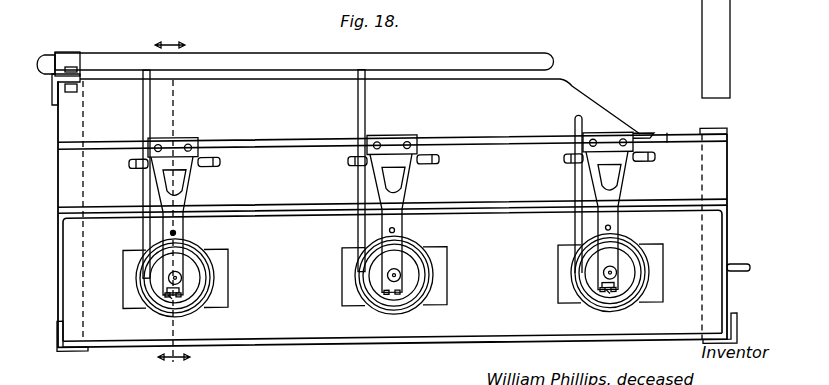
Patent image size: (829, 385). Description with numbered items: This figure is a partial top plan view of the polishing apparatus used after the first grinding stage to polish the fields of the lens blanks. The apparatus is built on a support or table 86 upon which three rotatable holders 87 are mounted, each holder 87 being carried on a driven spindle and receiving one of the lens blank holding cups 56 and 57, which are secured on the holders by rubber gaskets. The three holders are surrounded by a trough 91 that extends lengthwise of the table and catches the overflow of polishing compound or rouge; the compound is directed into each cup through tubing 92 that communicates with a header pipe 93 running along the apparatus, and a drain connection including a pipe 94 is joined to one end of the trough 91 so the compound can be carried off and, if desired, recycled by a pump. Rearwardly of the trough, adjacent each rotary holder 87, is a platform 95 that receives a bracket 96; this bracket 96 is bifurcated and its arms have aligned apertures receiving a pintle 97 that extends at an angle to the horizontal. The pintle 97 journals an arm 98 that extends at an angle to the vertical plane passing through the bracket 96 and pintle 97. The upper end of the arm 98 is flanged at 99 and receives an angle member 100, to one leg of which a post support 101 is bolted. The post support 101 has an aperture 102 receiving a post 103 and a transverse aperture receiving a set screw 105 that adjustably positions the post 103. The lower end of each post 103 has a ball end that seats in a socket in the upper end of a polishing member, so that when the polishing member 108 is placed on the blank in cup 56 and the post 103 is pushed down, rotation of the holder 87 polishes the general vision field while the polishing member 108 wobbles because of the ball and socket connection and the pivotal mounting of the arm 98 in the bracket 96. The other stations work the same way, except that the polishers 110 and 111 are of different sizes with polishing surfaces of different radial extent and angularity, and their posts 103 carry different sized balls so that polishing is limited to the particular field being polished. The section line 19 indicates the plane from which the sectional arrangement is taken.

The section line 19 is at (172, 191).
The lens blank holding cup 56 is at (203, 296).
The lens blank holding cup 57 is at (397, 312).
The support or table 86 is at (252, 352).
The rotatable holder 87 is at (191, 316).
The trough 91 is at (303, 341).
The tubing 92 is at (142, 125).
The header pipe 93 is at (265, 55).
The pipe 94 is at (748, 265).
The platform 95 is at (646, 139).
The bracket 96 is at (200, 143).
The pintle 97 is at (438, 167).
The arm 98 is at (198, 195).
The flange 99 is at (181, 229).
The angle member 100 is at (162, 233).
The post support 101 is at (180, 278).
The aperture 102 is at (167, 313).
The post 103 is at (172, 283).
The set screw 105 is at (170, 310).
The polishing member 108 is at (193, 285).
The polisher 110 is at (631, 290).
The polisher 111 is at (418, 282).